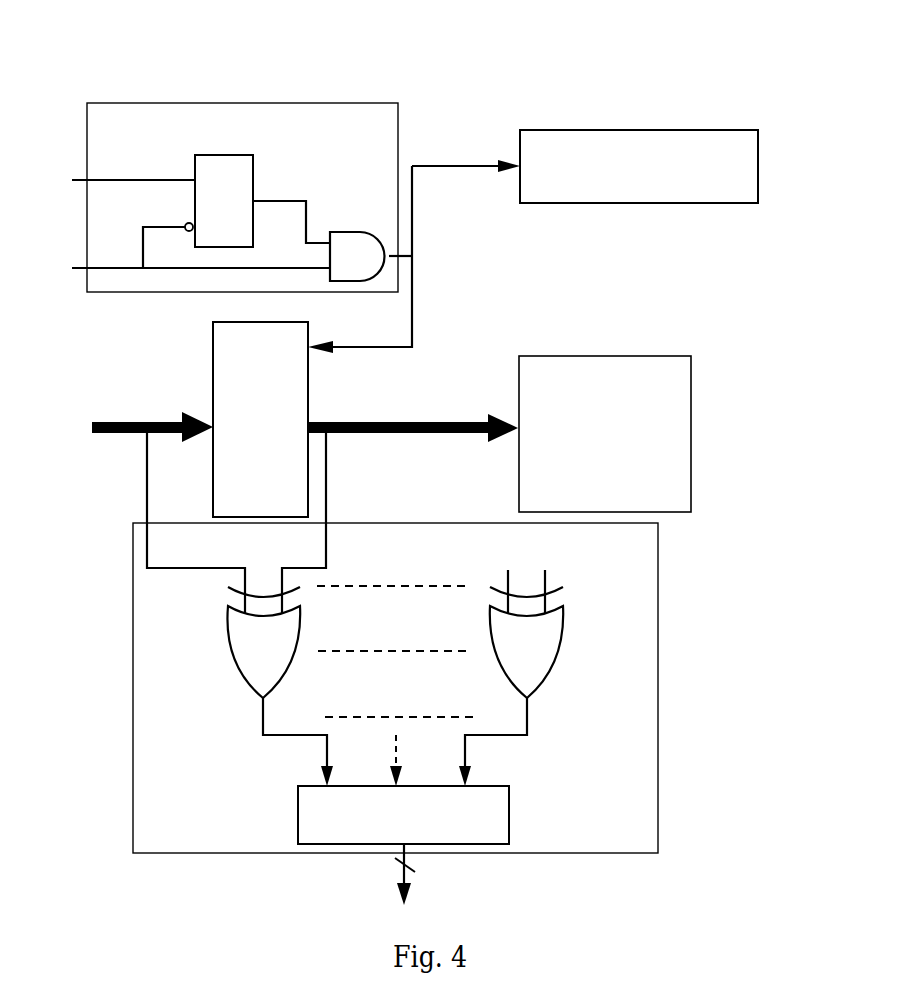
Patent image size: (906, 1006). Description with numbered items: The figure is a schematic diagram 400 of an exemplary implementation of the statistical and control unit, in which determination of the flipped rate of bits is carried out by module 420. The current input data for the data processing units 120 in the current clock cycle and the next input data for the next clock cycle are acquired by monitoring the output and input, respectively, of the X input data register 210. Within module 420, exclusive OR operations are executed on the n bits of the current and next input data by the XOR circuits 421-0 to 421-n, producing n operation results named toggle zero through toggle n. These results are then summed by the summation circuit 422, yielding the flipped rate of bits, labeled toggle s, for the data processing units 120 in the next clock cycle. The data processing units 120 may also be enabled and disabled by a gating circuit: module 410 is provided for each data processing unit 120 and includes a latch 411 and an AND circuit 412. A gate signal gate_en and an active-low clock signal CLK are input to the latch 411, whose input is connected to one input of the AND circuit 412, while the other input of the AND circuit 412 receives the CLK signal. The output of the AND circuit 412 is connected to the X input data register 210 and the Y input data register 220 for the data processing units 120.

The schematic diagram 400 is at (128, 54).
The module 410 is at (330, 103).
The latch 411 is at (226, 155).
The AND circuit 412 is at (338, 232).
The Y input data register 220 is at (660, 130).
The X input data register 210 is at (243, 322).
The data processing units 120 is at (630, 356).
The module 420 is at (659, 580).
The exclusive OR circuit 421-0 is at (228, 633).
The exclusive OR circuit 421-n is at (563, 653).
The summation circuit 422 is at (509, 805).